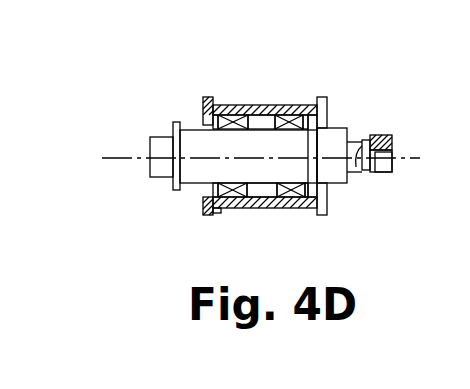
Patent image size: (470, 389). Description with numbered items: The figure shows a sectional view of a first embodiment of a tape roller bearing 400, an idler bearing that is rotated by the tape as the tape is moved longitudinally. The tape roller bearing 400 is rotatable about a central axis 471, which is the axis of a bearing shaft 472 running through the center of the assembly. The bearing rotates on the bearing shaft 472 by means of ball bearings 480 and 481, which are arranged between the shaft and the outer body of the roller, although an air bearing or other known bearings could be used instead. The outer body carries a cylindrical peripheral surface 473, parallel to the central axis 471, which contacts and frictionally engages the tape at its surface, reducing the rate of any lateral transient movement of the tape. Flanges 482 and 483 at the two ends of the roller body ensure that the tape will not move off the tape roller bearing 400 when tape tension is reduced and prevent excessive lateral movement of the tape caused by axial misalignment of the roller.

The tape roller bearing 400 is at (309, 71).
The central axis 471 is at (122, 160).
The bearing shaft 472 is at (337, 127).
The cylindrical peripheral surface 473 is at (252, 105).
The ball bearing 480 is at (235, 208).
The ball bearing 481 is at (293, 208).
The flange 482 is at (207, 215).
The flange 483 is at (318, 212).